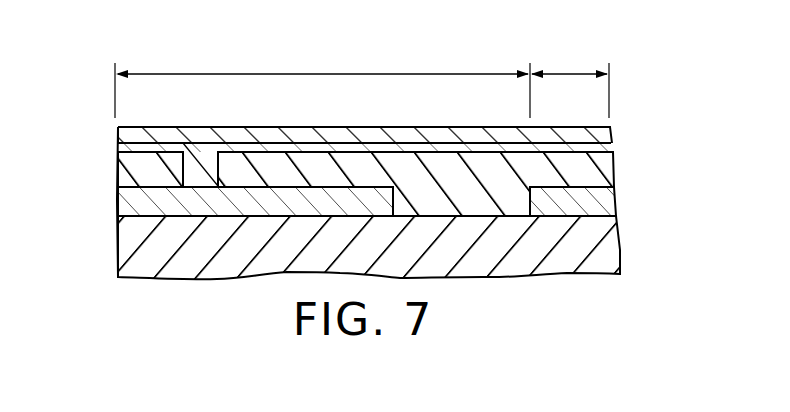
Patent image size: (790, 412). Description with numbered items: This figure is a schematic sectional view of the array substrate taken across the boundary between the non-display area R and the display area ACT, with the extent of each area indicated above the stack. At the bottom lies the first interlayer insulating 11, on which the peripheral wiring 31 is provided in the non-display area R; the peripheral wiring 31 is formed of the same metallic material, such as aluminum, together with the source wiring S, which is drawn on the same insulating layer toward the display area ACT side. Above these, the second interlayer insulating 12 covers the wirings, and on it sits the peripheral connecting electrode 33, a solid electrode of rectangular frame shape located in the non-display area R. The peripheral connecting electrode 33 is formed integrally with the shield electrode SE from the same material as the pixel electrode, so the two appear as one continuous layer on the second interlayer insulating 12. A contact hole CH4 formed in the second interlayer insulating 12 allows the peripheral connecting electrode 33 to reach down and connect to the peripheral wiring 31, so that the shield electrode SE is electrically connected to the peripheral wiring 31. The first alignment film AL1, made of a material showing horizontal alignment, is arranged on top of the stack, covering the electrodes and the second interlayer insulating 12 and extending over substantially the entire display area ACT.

The first interlayer insulating 11 is at (605, 243).
The second interlayer insulating 12 is at (605, 170).
The peripheral wiring 31 is at (137, 203).
The peripheral connecting electrode 33 is at (403, 150).
The source wiring S is at (602, 207).
The shield electrode SE is at (575, 147).
The contact hole CH4 is at (187, 172).
The first alignment film AL1 is at (603, 133).
The non-display area R is at (332, 73).
The display area ACT is at (573, 73).